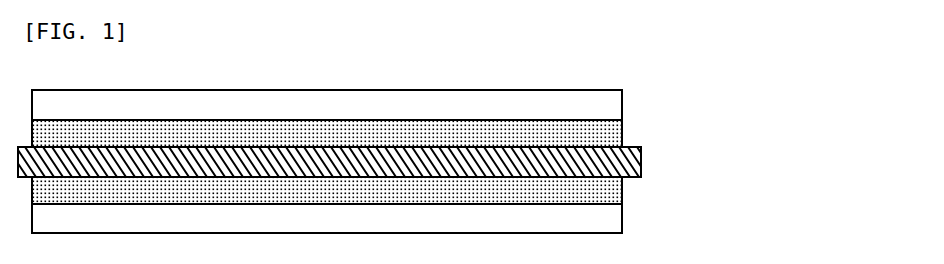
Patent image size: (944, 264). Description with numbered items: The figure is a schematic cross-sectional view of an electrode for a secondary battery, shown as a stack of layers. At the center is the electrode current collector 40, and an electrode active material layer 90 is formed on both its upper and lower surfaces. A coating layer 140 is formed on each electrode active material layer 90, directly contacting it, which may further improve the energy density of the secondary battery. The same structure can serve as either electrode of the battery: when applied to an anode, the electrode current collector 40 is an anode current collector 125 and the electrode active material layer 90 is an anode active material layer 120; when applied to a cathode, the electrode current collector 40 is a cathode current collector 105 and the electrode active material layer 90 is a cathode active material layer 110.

The coating layer 140 is at (623, 102).
The electrode active material layer 90 is at (447, 163).
The cathode active material layer 110 is at (327, 162).
The anode active material layer 120 is at (623, 130).
The electrode current collector 40 is at (441, 162).
The cathode current collector 105 is at (328, 162).
The anode current collector 125 is at (642, 163).